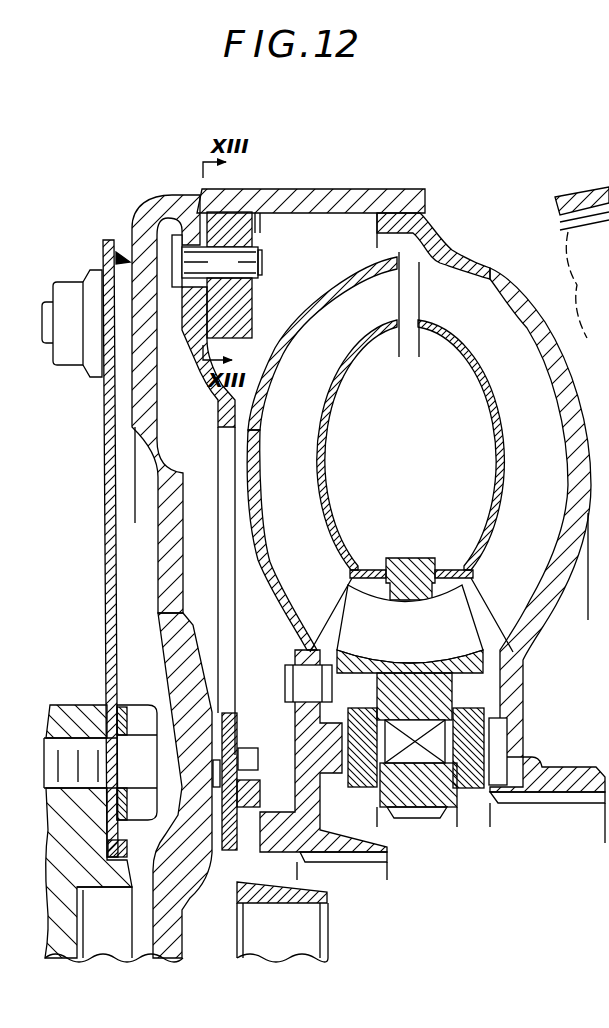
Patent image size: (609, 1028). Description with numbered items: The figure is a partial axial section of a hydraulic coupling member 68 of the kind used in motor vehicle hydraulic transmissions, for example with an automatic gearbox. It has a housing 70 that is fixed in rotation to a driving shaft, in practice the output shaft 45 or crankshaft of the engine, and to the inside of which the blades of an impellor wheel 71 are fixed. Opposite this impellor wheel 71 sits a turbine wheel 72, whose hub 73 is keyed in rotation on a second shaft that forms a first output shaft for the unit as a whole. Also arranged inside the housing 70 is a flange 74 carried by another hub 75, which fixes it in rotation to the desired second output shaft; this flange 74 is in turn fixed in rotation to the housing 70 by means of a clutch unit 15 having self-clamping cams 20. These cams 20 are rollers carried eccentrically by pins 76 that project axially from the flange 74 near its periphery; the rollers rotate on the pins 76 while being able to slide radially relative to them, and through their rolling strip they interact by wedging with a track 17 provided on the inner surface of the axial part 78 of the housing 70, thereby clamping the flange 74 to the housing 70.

The housing 70 is at (145, 203).
The clutch unit 15 is at (195, 197).
The track 17 is at (242, 190).
The axial part 78 is at (325, 187).
The hydraulic coupling member 68 is at (392, 182).
The turbine wheel 72 is at (344, 275).
The pins 76 is at (217, 261).
The self-clamping cams 20 is at (260, 331).
The impellor wheel 71 is at (518, 398).
The flange 74 is at (248, 553).
The output shaft 45 is at (70, 703).
The hub 73 is at (352, 865).
The hub 75 is at (333, 897).